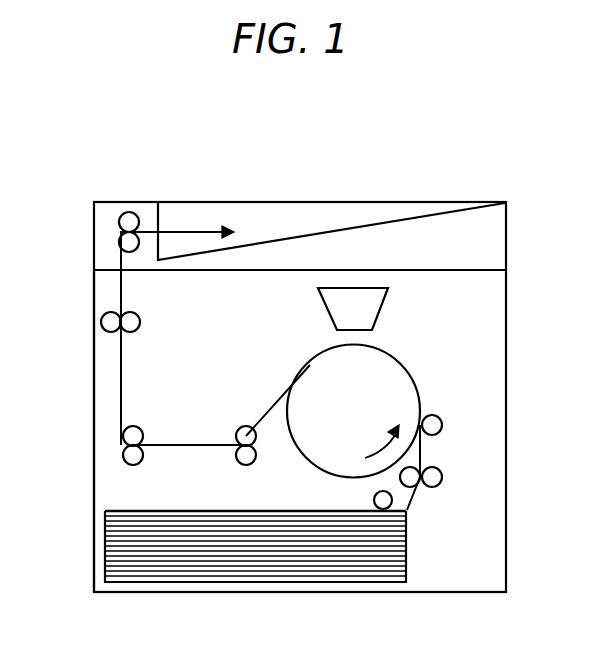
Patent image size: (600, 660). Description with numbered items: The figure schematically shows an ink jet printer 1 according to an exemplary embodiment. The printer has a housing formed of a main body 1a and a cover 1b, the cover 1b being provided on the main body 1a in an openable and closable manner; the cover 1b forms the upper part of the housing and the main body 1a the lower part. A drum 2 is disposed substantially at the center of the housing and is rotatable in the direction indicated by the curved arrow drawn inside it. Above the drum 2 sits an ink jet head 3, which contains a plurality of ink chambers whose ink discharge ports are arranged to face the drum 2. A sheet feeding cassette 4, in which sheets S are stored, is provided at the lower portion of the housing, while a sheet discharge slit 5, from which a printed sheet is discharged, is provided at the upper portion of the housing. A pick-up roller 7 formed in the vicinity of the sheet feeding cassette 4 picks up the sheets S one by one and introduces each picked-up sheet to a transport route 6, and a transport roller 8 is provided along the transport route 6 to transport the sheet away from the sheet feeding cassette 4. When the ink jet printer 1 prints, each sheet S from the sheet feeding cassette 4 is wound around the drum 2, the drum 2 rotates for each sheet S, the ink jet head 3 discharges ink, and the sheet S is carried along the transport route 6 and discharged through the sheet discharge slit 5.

The ink jet printer 1 is at (36, 146).
The main body 1a is at (507, 448).
The cover 1b is at (507, 254).
The drum 2 is at (318, 372).
The ink jet head 3 is at (373, 304).
The sheet feeding cassette 4 is at (407, 552).
The sheet discharge slit 5 is at (302, 232).
The transport route 6 is at (188, 445).
The pick-up roller 7 is at (374, 496).
The transport roller 8 is at (136, 214).
The sheet S is at (185, 517).